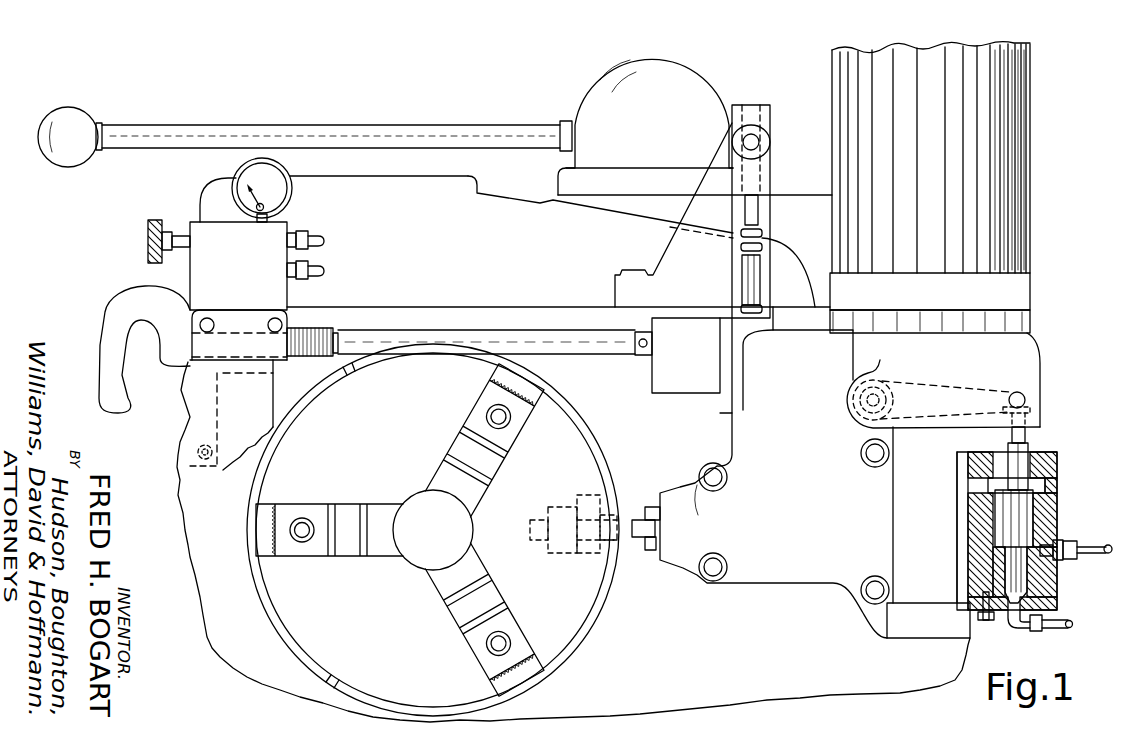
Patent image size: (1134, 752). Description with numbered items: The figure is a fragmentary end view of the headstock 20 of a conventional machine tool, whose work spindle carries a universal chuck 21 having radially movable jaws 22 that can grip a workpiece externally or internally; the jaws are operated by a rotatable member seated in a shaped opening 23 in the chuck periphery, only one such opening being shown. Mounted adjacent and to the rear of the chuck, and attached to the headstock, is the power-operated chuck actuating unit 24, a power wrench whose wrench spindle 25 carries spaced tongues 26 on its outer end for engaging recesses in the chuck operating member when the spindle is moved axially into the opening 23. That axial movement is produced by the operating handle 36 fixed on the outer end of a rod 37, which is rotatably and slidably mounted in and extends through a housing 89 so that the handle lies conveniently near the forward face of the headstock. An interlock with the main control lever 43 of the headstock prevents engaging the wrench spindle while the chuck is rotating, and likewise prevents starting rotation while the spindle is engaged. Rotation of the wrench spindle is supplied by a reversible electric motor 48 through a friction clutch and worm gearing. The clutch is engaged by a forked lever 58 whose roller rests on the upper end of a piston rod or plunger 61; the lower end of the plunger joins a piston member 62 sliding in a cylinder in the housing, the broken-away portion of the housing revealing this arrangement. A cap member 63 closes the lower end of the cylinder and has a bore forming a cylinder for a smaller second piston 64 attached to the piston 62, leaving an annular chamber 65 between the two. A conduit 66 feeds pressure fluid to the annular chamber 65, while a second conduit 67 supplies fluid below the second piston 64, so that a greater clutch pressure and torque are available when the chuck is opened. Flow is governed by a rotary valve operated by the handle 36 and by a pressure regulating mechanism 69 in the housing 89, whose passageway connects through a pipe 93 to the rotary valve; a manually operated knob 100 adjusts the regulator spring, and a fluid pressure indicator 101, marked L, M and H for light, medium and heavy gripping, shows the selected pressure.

The headstock 20 is at (226, 643).
The chuck 21 is at (277, 580).
The radially movable jaws 22 is at (478, 418).
The opening 23 is at (598, 503).
The power-operated chuck actuating unit 24 is at (808, 591).
The wrench spindle 25 is at (650, 520).
The spaced tongues 26 is at (650, 552).
The operating handle 36 is at (125, 305).
The rod 37 is at (342, 330).
The main control lever 43 is at (518, 128).
The reversible electric motor 48 is at (843, 129).
The forked lever 58 is at (975, 378).
The piston rod or plunger 61 is at (1027, 433).
The piston member 62 is at (1035, 527).
The cap member 63 is at (1058, 605).
The second piston 64 is at (1037, 565).
The annular chamber 65 is at (997, 555).
The conduit 66 is at (1088, 546).
The second conduit 67 is at (1060, 630).
The pressure regulating mechanism 69 is at (228, 220).
The housing 89 is at (205, 418).
The conduit or pipe 93 is at (320, 238).
The manually-operated knob 100 is at (165, 210).
The fluid pressure indicator 101 is at (288, 176).